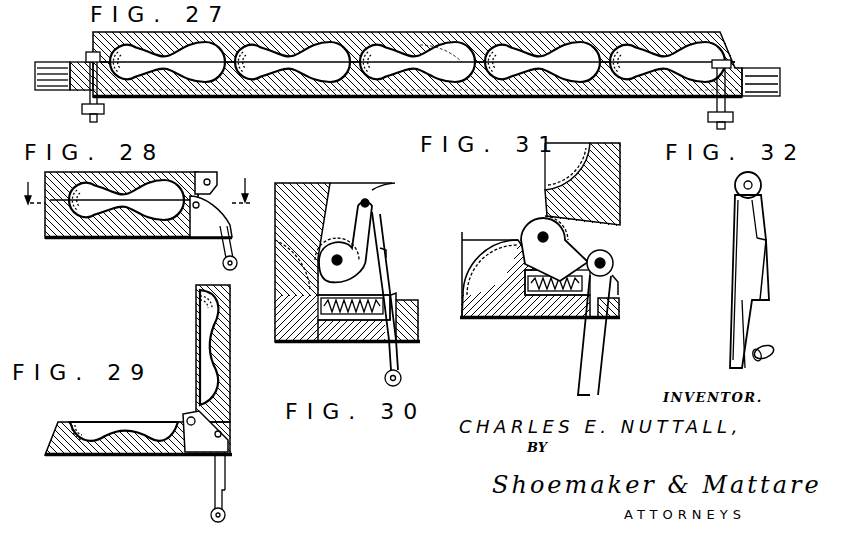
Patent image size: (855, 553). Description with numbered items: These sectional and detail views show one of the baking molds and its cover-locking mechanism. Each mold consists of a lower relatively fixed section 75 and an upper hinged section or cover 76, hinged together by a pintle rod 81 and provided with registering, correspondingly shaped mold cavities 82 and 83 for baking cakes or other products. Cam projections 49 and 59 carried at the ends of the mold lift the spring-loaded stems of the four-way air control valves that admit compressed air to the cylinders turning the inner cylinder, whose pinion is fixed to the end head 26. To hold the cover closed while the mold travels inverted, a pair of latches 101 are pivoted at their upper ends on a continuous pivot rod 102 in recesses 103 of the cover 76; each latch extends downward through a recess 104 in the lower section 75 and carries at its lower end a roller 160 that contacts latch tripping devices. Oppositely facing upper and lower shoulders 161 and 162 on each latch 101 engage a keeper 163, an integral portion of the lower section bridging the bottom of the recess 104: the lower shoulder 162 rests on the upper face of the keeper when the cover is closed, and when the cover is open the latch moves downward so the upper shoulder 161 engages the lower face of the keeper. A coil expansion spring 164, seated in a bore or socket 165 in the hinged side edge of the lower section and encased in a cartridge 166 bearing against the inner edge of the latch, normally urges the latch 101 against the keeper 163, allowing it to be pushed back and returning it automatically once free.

In FIG. 28, the end head 26 is at (133, 191).
In FIG. 27, the cam projection 49 is at (58, 60).
In FIG. 27, the cam projection 59 is at (768, 64).
In FIG. 27, the lower relatively fixed section 75 is at (290, 96).
In FIG. 28, the lower relatively fixed section 75 is at (124, 226).
In FIG. 29, the lower relatively fixed section 75 is at (128, 456).
In FIG. 30, the lower relatively fixed section 75 is at (300, 344).
In FIG. 31, the lower relatively fixed section 75 is at (494, 319).
In FIG. 27, the upper hinged section or cover 76 is at (351, 40).
In FIG. 28, the upper hinged section or cover 76 is at (175, 172).
In FIG. 29, the upper hinged section or cover 76 is at (223, 358).
In FIG. 30, the upper hinged section or cover 76 is at (308, 190).
In FIG. 31, the upper hinged section or cover 76 is at (610, 200).
In FIG. 28, the pintle rod 81 is at (173, 240).
In FIG. 29, the pintle rod 81 is at (189, 418).
In FIG. 30, the pintle rod 81 is at (348, 250).
In FIG. 31, the pintle rod 81 is at (541, 235).
In FIG. 27, the mold cavity 82 is at (433, 50).
In FIG. 28, the mold cavity 82 is at (61, 238).
In FIG. 29, the mold cavity 82 is at (200, 334).
In FIG. 27, the mold cavity 83 is at (436, 76).
In FIG. 28, the mold cavity 83 is at (100, 216).
In FIG. 29, the mold cavity 83 is at (92, 428).
In FIG. 27, the latch 101 is at (312, 32).
In FIG. 28, the latch 101 is at (232, 250).
In FIG. 29, the latch 101 is at (228, 471).
In FIG. 30, the latch 101 is at (393, 273).
In FIG. 31, the latch 101 is at (590, 352).
In FIG. 32, the latch 101 is at (746, 276).
In FIG. 27, the pivot rod 102 is at (290, 32).
In FIG. 28, the pivot rod 102 is at (210, 178).
In FIG. 29, the pivot rod 102 is at (230, 433).
In FIG. 30, the pivot rod 102 is at (367, 200).
In FIG. 31, the pivot rod 102 is at (607, 262).
In FIG. 30, the recess 103 is at (393, 187).
In FIG. 31, the recess 104 is at (622, 288).
In FIG. 28, the roller 160 is at (222, 267).
In FIG. 29, the roller 160 is at (210, 516).
In FIG. 30, the roller 160 is at (403, 379).
In FIG. 32, the roller 160 is at (768, 345).
In FIG. 30, the upper shoulder 161 is at (390, 253).
In FIG. 32, the upper shoulder 161 is at (762, 230).
In FIG. 29, the lower shoulder 162 is at (226, 492).
In FIG. 30, the lower shoulder 162 is at (397, 291).
In FIG. 32, the lower shoulder 162 is at (766, 306).
In FIG. 30, the keeper 163 is at (420, 336).
In FIG. 31, the keeper 163 is at (622, 305).
In FIG. 31, the coil expansion spring 164 is at (498, 283).
In FIG. 30, the bore or socket 165 is at (343, 344).
In FIG. 31, the bore or socket 165 is at (542, 320).
In FIG. 30, the cartridge 166 is at (354, 343).
In FIG. 31, the cartridge 166 is at (600, 242).